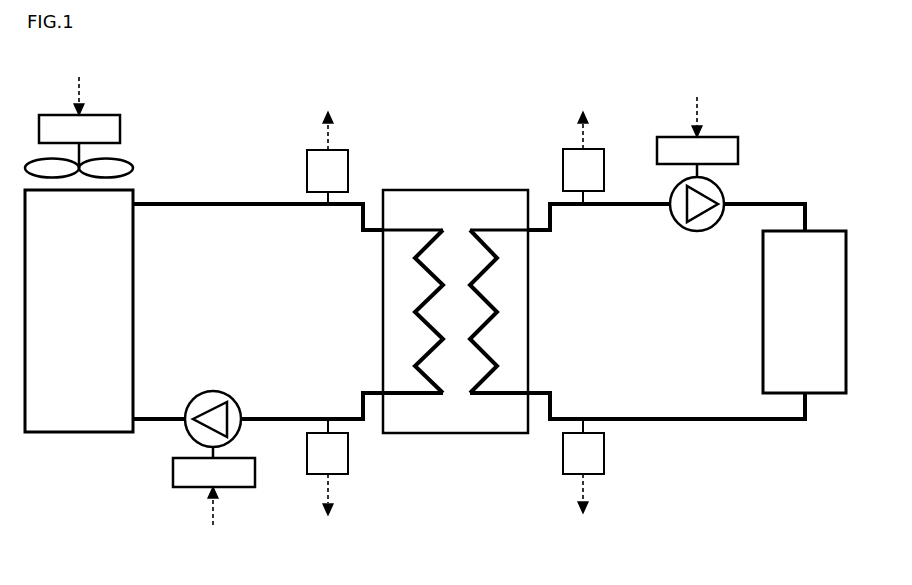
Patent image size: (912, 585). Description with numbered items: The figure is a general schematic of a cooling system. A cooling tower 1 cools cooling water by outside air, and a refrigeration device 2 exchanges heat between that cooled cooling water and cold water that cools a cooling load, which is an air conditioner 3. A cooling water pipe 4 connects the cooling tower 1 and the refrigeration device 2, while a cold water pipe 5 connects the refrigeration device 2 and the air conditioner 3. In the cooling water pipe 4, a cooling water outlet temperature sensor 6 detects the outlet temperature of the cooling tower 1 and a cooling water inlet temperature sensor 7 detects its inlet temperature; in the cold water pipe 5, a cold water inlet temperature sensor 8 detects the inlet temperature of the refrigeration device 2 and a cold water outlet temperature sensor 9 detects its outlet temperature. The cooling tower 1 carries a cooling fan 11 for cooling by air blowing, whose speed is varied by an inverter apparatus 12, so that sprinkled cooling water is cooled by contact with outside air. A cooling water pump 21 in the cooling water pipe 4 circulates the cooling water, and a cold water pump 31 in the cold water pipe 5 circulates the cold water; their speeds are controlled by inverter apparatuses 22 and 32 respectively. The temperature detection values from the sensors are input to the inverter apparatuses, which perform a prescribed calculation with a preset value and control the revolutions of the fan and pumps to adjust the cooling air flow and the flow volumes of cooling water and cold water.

The cooling tower 1 is at (79, 432).
The refrigeration device 2 is at (443, 190).
The air conditioner 3 is at (821, 394).
The cooling water pipe 4 is at (188, 203).
The cold water pipe 5 is at (727, 420).
The cooling water outlet temperature sensor 6 is at (337, 150).
The cooling water inlet temperature sensor 7 is at (340, 476).
The cold water inlet temperature sensor 8 is at (571, 477).
The cold water outlet temperature sensor 9 is at (596, 148).
The cooling fan 11 is at (120, 158).
The inverter apparatus 12 is at (93, 115).
The cooling water pump 21 is at (230, 395).
The inverter apparatus 22 is at (192, 488).
The cold water pump 31 is at (686, 232).
The inverter apparatus 32 is at (711, 137).